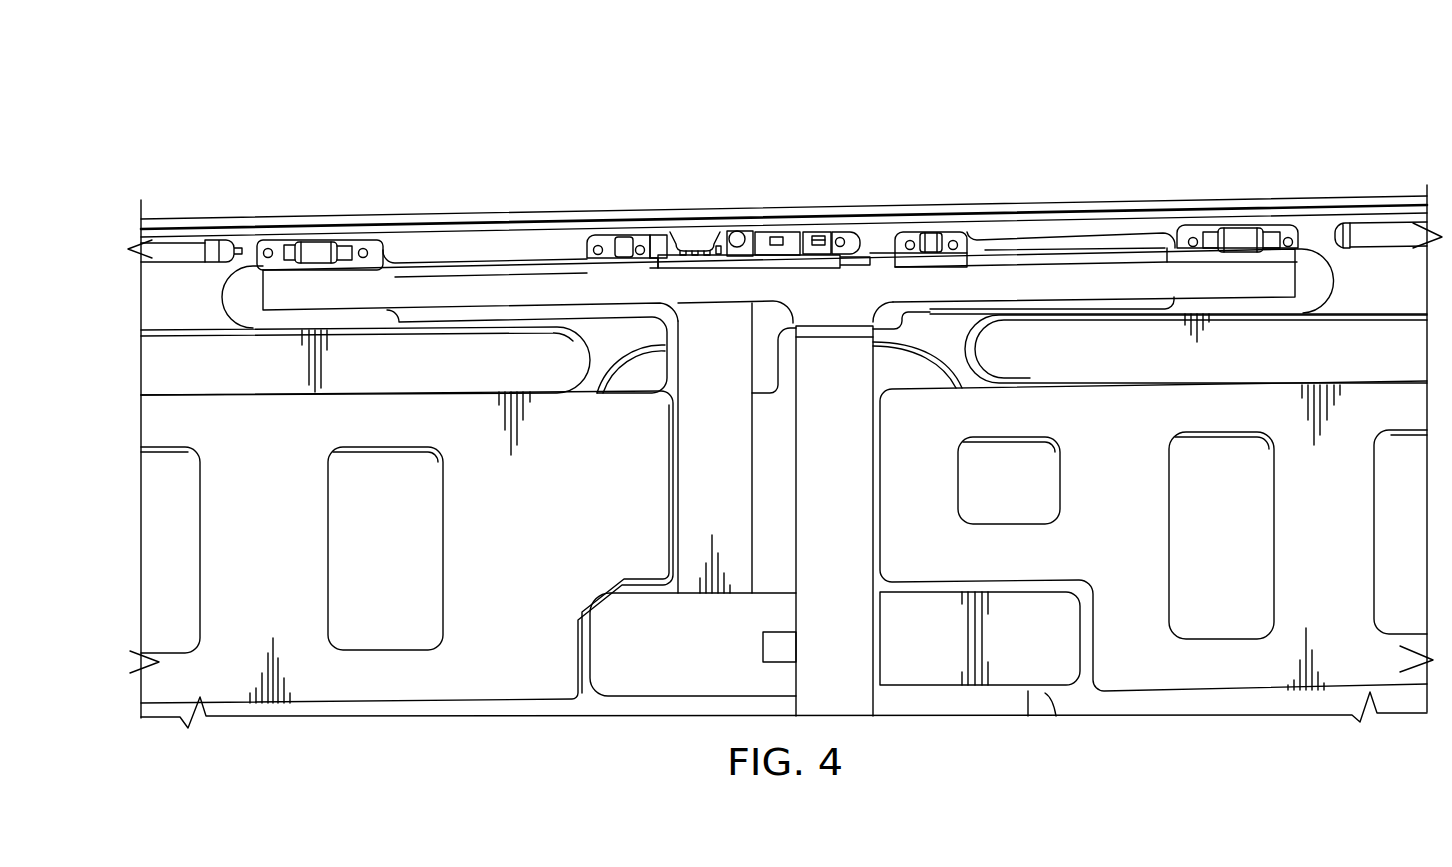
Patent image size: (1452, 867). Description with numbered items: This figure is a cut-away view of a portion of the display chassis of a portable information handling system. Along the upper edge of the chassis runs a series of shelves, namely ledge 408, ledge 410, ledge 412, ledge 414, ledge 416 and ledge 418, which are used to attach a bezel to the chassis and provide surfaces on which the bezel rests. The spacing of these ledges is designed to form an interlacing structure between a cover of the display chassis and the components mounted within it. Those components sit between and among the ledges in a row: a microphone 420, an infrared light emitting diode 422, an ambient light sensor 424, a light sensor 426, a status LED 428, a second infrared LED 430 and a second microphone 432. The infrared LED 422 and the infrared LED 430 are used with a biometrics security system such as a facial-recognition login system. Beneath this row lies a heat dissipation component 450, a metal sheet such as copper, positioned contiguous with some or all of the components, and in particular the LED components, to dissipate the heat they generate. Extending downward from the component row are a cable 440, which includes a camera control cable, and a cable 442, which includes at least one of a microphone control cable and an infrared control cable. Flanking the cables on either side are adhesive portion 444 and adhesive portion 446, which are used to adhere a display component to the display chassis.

The ledge 408 is at (237, 242).
The microphone 420 is at (320, 243).
The ledge 410 is at (443, 238).
The infrared light emitting diode (IR LED) 422 is at (627, 240).
The ledge 412 is at (693, 238).
The ambient light sensor (ALS) 424 is at (735, 230).
The light sensor 426 is at (792, 234).
The status LED 428 is at (830, 232).
The ledge 414 is at (883, 236).
The IR LED 430 is at (932, 233).
The ledge 416 is at (1020, 232).
The heat dissipation component 450 is at (1127, 262).
The microphone 432 is at (1245, 232).
The ledge 418 is at (1317, 230).
The cable 440 is at (690, 487).
The cable 442 is at (864, 430).
The adhesive portion 444 is at (268, 385).
The adhesive portion 446 is at (1100, 372).